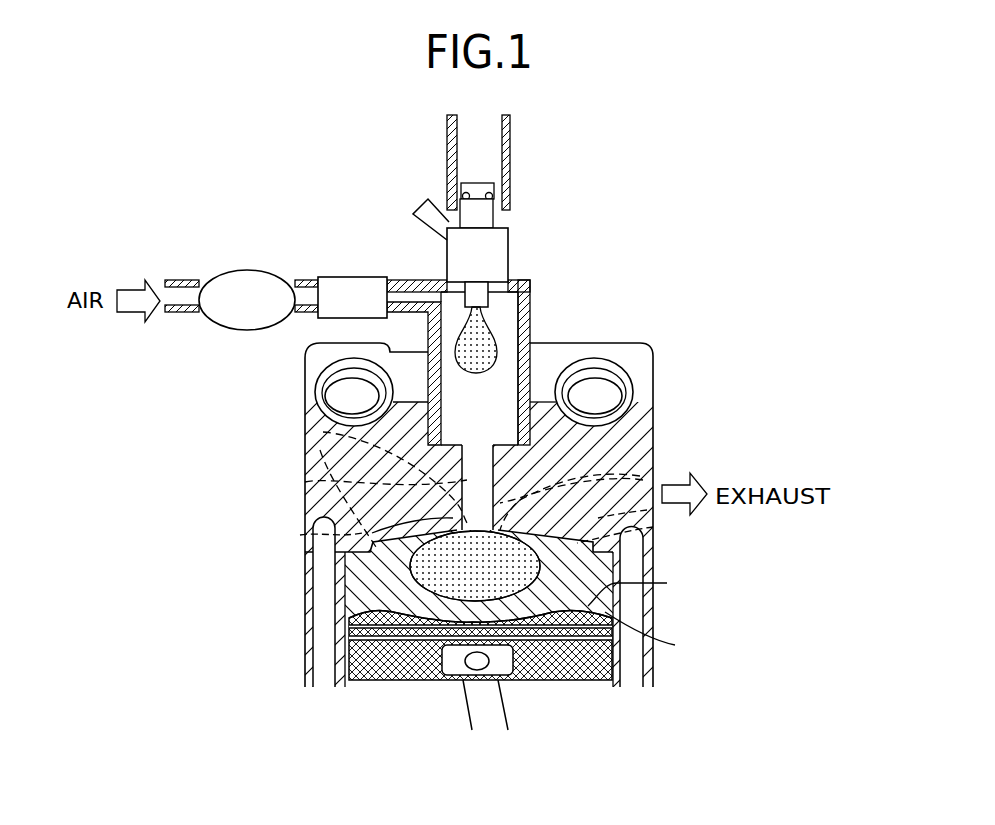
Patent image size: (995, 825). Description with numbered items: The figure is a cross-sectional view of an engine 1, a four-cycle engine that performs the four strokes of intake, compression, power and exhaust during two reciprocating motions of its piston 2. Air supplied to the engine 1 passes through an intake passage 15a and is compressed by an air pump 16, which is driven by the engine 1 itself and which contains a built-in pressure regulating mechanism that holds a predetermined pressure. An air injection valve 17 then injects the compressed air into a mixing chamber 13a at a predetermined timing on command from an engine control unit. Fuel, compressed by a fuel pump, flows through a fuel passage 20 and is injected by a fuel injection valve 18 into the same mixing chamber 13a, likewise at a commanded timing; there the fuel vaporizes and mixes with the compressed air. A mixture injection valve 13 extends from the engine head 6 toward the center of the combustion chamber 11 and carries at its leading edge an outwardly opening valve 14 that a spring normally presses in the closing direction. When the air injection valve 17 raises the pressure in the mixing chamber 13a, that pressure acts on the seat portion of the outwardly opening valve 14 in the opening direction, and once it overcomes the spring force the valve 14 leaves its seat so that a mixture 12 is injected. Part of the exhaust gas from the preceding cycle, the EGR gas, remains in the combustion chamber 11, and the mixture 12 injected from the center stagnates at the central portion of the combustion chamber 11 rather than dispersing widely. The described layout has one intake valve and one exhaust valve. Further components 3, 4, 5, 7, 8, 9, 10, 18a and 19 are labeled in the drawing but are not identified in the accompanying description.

The engine 1 is at (400, 483).
The piston 2 is at (380, 680).
The connecting rod 3 is at (493, 700).
The cylinder block 4 is at (308, 651).
The cylinder bore wall 5 is at (323, 588).
The engine head 6 is at (633, 427).
The intake port 7 is at (320, 452).
The exhaust port 8 is at (640, 476).
The intake valve 9 is at (340, 395).
The exhaust valve 10 is at (602, 392).
The combustion chamber 11 is at (548, 607).
The mixture 12 is at (632, 546).
The mixture injection valve 13 is at (470, 482).
The mixing chamber 13a is at (502, 378).
The outwardly opening valve 14 is at (313, 535).
The intake passage 15a is at (182, 313).
The air pump 16 is at (244, 268).
The air injection valve 17 is at (350, 273).
The fuel injection valve 18 is at (495, 256).
The fuel supply pipe 18a is at (427, 200).
The fuel spray 19 is at (483, 320).
The fuel passage 20 is at (468, 143).